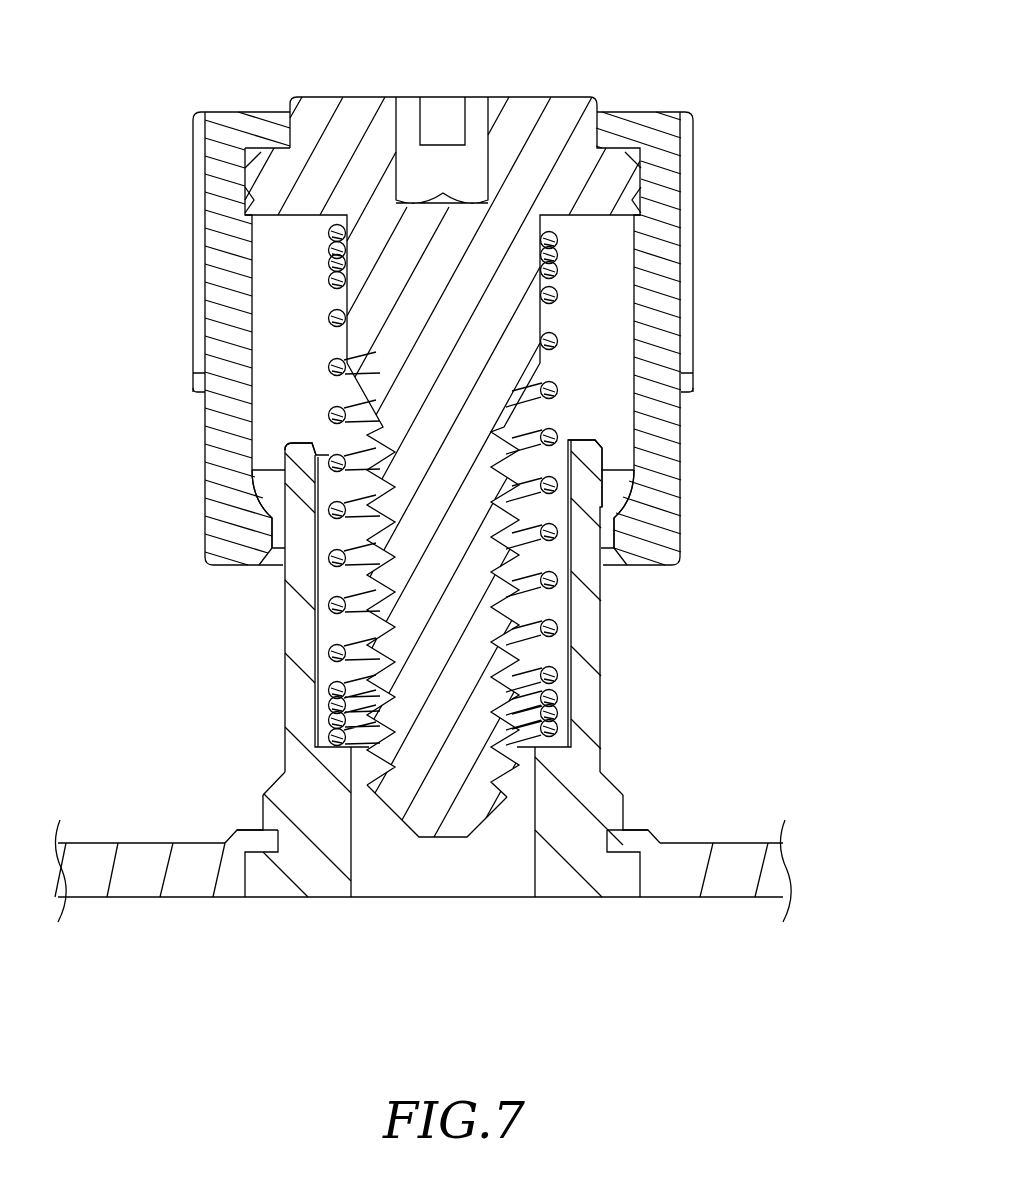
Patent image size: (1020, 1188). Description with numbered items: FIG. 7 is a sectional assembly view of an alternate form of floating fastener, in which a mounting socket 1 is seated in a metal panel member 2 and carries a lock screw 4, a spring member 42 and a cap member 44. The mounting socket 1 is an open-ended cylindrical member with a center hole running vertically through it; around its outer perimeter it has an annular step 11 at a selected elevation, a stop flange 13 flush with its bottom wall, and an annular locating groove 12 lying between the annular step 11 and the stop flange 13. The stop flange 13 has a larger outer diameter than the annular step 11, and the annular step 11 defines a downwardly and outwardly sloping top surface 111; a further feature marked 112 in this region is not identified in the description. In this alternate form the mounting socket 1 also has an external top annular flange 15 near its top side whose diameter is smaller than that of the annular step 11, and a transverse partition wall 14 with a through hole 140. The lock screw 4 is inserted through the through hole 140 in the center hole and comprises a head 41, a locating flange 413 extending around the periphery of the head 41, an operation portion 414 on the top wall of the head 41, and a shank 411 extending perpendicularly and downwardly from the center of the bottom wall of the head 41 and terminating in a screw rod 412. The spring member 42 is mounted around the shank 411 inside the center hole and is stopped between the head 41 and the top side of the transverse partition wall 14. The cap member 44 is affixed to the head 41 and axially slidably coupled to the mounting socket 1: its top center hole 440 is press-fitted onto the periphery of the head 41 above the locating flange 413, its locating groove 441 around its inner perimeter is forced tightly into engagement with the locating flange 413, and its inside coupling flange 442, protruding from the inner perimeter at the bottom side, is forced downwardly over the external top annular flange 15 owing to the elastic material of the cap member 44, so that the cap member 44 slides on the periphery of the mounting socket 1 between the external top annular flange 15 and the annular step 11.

The mounting socket 1 is at (583, 647).
The annular step 11 is at (270, 818).
The sloping top surface 111 is at (270, 790).
The outer chamfer 112 is at (607, 830).
The annular locating groove 12 is at (620, 853).
The stop flange 13 is at (275, 868).
The transverse partition wall 14 is at (587, 746).
The through hole 140 is at (535, 795).
The external top annular flange 15 is at (603, 497).
The metal panel member 2 is at (737, 862).
The lock screw 4 is at (326, 74).
The head 41 is at (523, 117).
The shank 411 is at (512, 328).
The screw rod 412 is at (470, 790).
The locating flange 413 is at (603, 181).
The operation portion 414 is at (443, 118).
The spring member 42 is at (555, 268).
The cap member 44 is at (223, 332).
The top center hole 440 is at (263, 401).
The locating groove 441 is at (246, 176).
The inside coupling flange 442 is at (272, 517).